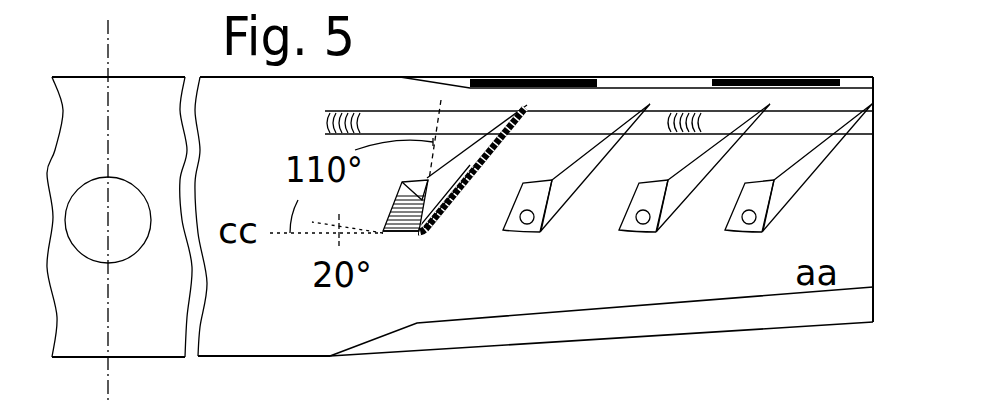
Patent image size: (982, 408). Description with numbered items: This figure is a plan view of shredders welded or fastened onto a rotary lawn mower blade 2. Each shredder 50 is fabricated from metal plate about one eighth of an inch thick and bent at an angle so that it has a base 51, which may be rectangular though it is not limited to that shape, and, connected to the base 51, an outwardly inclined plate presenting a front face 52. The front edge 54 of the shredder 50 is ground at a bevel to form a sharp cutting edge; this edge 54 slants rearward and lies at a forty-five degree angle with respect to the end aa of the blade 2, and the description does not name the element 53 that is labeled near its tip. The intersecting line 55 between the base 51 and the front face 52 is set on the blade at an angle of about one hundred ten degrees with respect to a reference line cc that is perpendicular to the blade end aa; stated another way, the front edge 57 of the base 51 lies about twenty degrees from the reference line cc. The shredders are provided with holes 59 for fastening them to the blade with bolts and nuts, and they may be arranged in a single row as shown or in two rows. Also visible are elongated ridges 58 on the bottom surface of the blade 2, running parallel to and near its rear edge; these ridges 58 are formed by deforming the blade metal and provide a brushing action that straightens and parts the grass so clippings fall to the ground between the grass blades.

The blade 2 is at (873, 270).
The shredder 50 is at (818, 180).
The base 51 is at (397, 196).
The front face 52 is at (502, 120).
The blade tip 53 is at (529, 108).
The front edge 54 is at (497, 143).
The intersecting line 55 is at (398, 142).
The front edge of the base 57 is at (402, 232).
The elongated ridges 58 is at (683, 117).
The holes 59 is at (530, 223).